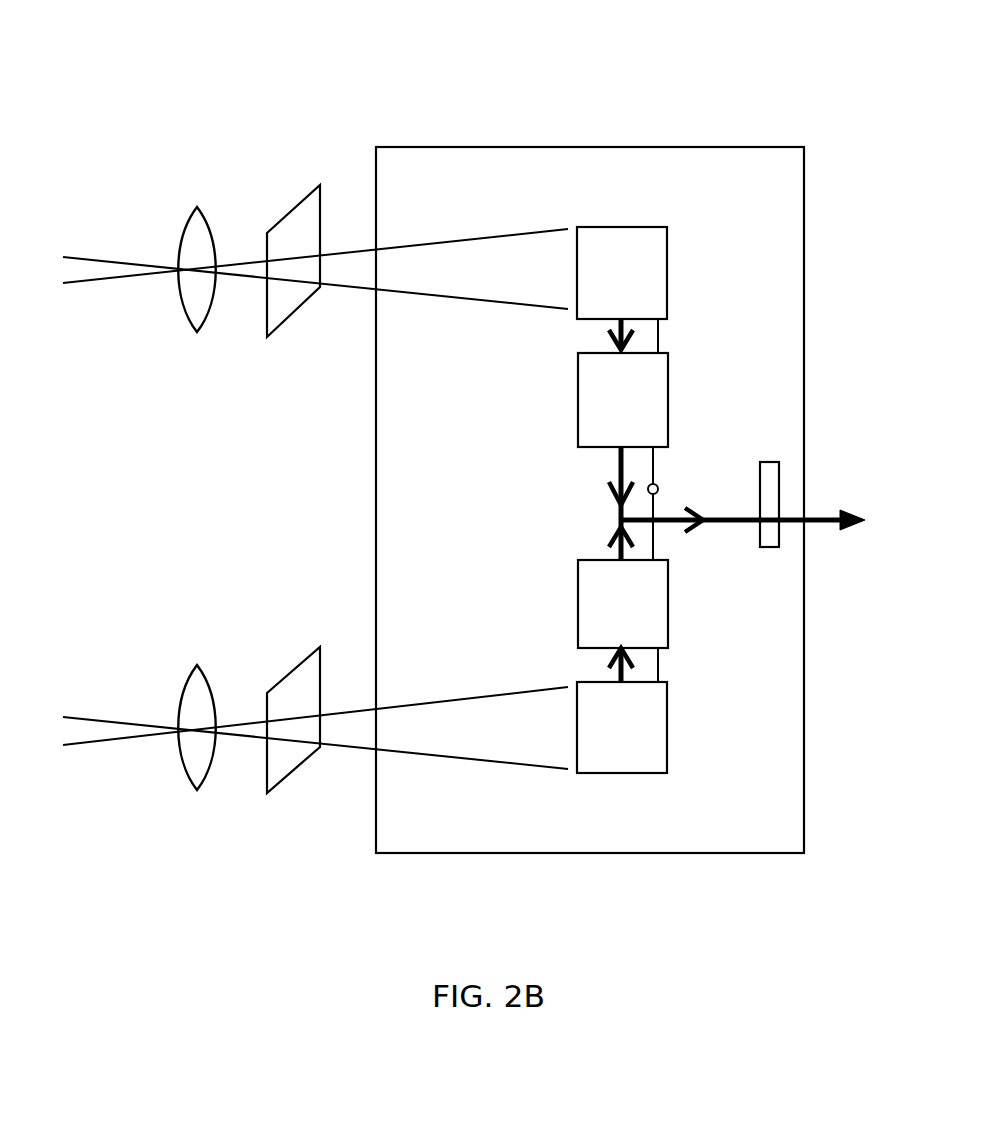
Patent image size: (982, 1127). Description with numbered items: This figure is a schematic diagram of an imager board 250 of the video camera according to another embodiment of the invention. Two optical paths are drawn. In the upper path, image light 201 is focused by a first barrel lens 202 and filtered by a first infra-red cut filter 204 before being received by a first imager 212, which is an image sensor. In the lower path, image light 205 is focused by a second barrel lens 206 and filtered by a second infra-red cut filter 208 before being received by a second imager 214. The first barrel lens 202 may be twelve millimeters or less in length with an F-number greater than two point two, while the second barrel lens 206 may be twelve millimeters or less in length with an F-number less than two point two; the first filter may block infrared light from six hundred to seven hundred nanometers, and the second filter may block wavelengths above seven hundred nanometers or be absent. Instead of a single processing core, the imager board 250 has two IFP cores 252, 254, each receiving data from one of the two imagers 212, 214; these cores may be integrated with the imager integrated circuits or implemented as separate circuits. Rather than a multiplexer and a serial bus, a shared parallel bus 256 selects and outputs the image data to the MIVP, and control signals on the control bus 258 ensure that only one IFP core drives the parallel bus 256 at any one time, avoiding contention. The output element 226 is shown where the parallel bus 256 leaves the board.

The image light 201 is at (301, 269).
The first barrel lens 202 is at (196, 173).
The first infra-red cut filter 204 is at (287, 185).
The image light 205 is at (295, 728).
The second barrel lens 206 is at (196, 803).
The second infra-red cut filter 208 is at (287, 798).
The first imager 212 is at (677, 268).
The second imager 214 is at (678, 725).
The output interface 226 is at (785, 540).
The imager board 250 is at (808, 193).
The IFP core 252 is at (688, 398).
The IFP core 254 is at (690, 603).
The shared parallel bus 256 is at (713, 500).
The control bus 258 is at (658, 489).